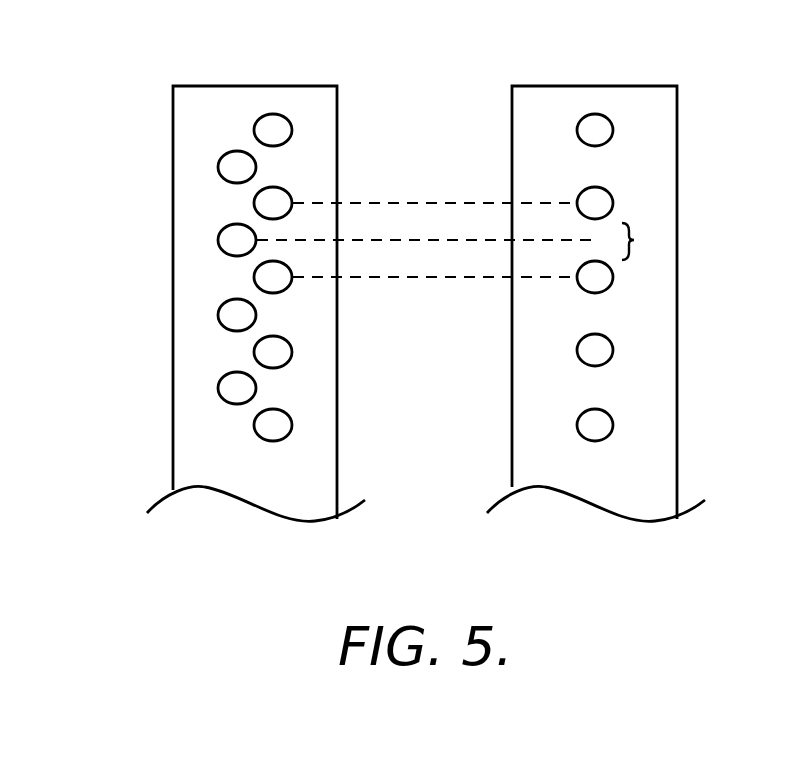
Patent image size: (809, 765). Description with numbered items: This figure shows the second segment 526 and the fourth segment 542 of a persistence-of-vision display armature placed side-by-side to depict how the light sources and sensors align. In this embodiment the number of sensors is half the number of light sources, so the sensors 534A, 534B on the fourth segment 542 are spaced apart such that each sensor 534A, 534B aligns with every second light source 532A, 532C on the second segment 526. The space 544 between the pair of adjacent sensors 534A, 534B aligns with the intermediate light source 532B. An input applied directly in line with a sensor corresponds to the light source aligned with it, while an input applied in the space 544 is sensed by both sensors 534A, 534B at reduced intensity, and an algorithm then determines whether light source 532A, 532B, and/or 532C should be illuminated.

The second segment 526 is at (209, 281).
The fourth segment 542 is at (635, 281).
The light source 532A is at (254, 203).
The intermediate light source 532B is at (218, 240).
The light source 532C is at (254, 277).
The sensor 534A is at (614, 203).
The sensor 534B is at (614, 277).
The space 544 is at (634, 240).